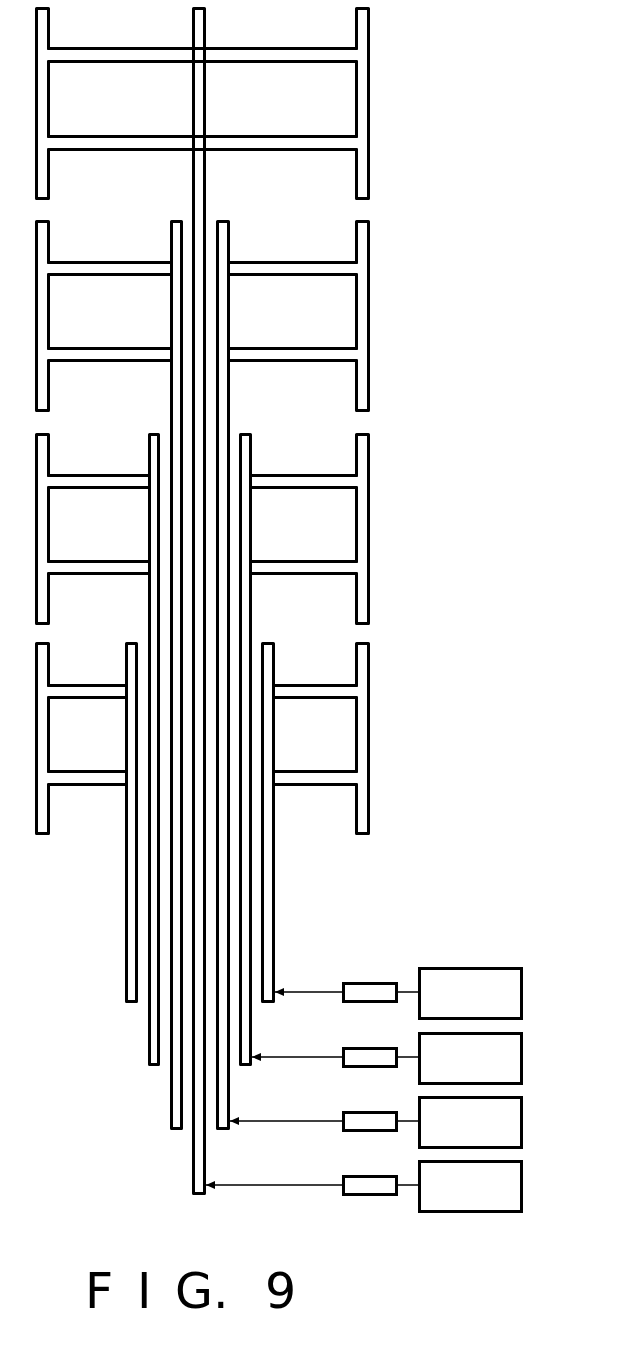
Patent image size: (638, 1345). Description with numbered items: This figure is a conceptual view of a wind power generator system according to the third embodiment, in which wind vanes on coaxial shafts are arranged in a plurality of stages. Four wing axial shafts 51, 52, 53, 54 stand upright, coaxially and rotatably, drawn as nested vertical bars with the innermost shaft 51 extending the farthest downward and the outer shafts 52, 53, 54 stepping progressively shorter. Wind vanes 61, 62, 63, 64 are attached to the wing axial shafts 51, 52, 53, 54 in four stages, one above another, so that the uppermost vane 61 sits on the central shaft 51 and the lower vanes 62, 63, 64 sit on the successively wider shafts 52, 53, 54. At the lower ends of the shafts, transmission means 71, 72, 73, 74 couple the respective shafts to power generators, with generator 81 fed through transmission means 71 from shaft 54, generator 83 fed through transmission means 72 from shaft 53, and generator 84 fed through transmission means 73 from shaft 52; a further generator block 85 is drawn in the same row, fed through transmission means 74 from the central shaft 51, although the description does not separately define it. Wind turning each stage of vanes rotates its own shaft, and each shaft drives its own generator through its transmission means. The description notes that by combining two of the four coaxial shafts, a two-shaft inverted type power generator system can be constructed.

The wing axial shaft 51 is at (192, 1163).
The wing axial shaft 52 is at (170, 1103).
The wing axial shaft 53 is at (148, 1042).
The wing axial shaft 54 is at (125, 978).
The wind vane 61 is at (369, 108).
The wind vane 62 is at (369, 301).
The wind vane 63 is at (369, 512).
The wind vane 64 is at (369, 746).
The transmission means 71 is at (378, 981).
The transmission means 72 is at (378, 1046).
The transmission means 73 is at (378, 1110).
The transmission means 74 is at (378, 1174).
The power generator 81 is at (523, 984).
The power generator 83 is at (523, 1048).
The power generator 84 is at (523, 1112).
The fourth signal source 85 is at (523, 1176).